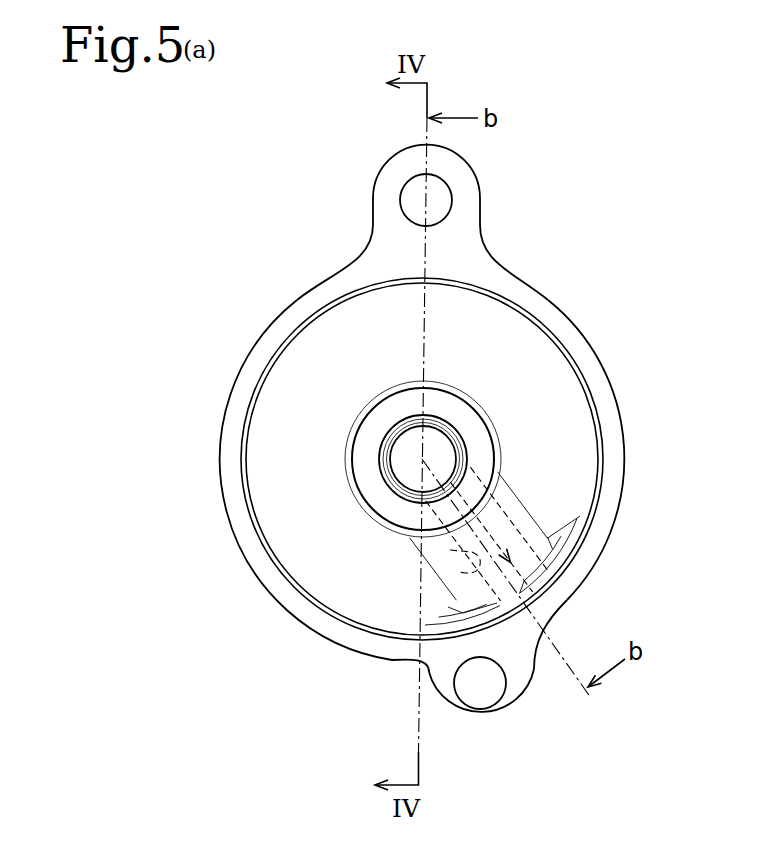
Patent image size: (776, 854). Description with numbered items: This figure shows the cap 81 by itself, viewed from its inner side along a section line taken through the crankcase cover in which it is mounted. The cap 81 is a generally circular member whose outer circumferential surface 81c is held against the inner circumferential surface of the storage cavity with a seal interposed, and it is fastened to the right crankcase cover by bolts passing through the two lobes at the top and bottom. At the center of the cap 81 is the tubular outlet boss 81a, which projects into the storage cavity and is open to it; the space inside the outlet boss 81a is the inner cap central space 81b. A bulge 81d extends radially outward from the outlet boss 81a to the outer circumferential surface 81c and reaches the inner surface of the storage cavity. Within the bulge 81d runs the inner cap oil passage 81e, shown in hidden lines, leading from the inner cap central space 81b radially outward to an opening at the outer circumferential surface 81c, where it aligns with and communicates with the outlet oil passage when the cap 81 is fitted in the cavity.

The cap 81 is at (571, 257).
The outlet boss 81a is at (447, 390).
The inner cap central space 81b is at (443, 458).
The outer circumferential surface 81c is at (583, 546).
The bulge 81d is at (520, 505).
The inner cap oil passage 81e is at (462, 577).